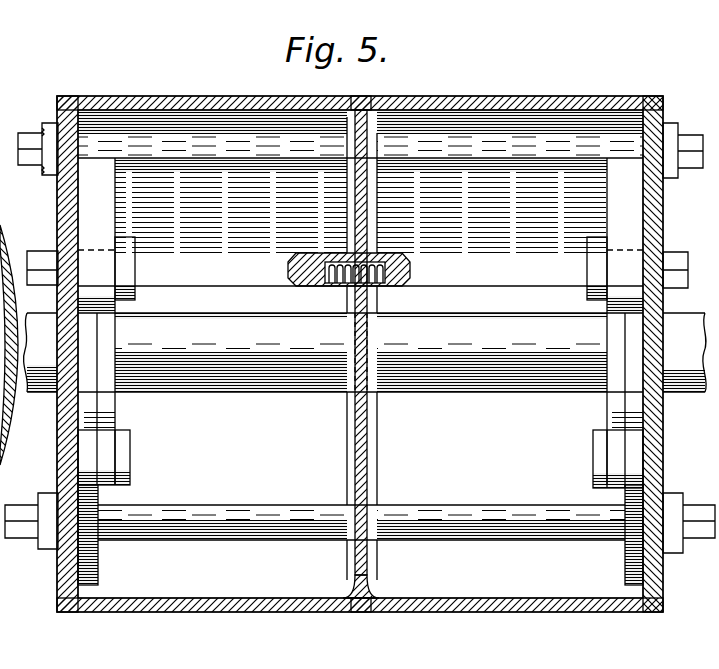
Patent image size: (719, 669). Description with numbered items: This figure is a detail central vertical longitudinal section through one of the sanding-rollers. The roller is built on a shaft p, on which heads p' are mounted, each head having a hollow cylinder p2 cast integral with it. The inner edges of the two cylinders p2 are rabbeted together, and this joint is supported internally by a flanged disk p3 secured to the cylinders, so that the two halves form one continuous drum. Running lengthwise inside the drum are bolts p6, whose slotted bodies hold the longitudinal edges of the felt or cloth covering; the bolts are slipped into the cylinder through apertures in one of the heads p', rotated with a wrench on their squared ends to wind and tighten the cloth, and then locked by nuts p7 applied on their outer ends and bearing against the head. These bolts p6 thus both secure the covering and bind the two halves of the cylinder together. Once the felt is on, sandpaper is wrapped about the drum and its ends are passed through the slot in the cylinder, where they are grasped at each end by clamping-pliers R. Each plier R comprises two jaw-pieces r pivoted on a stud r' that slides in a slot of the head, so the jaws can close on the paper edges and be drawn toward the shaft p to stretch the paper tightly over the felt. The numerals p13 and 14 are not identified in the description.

The hollow cylinder p2 is at (537, 108).
The head p' is at (52, 354).
The bolt p6 is at (221, 140).
The jaw-piece r is at (360, 222).
The clamping-pliers R is at (360, 371).
The stud r' is at (323, 281).
The flanged disk p3 is at (370, 592).
The shaft p is at (365, 367).
The lower shaft p13 is at (507, 512).
The nut p7 is at (46, 128).
The bolt 14 is at (9, 530).